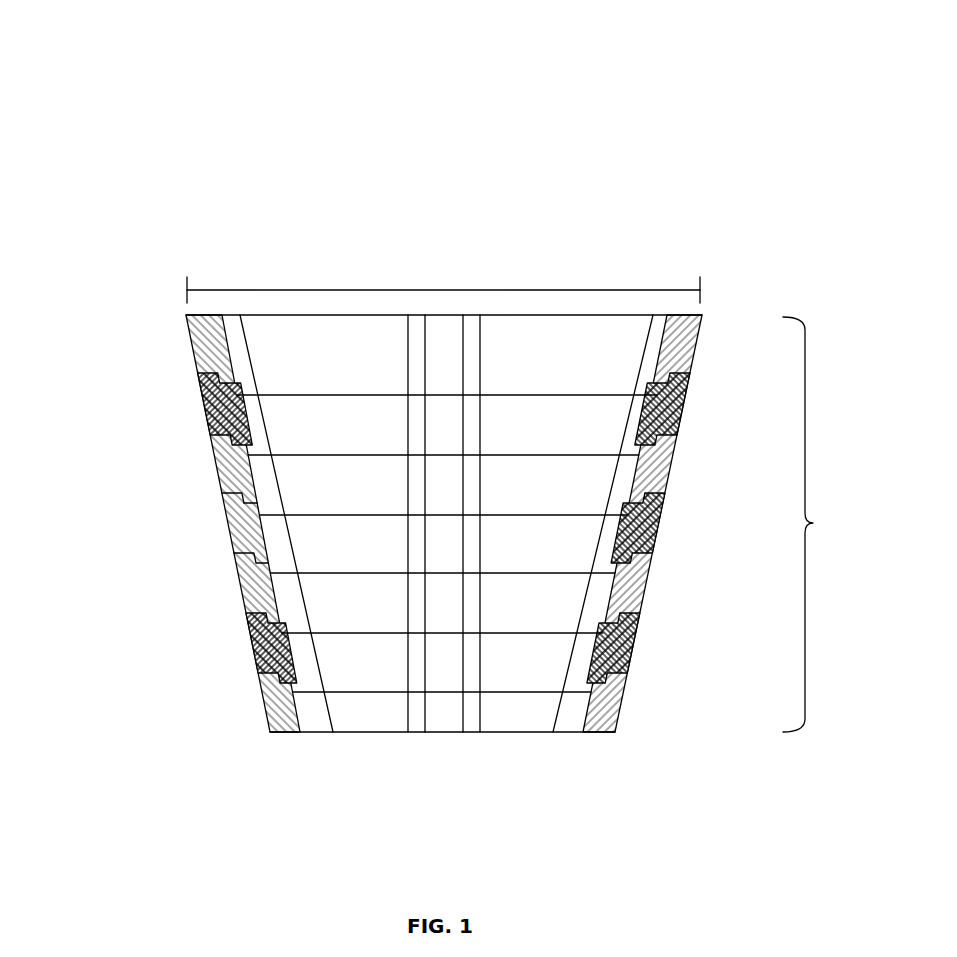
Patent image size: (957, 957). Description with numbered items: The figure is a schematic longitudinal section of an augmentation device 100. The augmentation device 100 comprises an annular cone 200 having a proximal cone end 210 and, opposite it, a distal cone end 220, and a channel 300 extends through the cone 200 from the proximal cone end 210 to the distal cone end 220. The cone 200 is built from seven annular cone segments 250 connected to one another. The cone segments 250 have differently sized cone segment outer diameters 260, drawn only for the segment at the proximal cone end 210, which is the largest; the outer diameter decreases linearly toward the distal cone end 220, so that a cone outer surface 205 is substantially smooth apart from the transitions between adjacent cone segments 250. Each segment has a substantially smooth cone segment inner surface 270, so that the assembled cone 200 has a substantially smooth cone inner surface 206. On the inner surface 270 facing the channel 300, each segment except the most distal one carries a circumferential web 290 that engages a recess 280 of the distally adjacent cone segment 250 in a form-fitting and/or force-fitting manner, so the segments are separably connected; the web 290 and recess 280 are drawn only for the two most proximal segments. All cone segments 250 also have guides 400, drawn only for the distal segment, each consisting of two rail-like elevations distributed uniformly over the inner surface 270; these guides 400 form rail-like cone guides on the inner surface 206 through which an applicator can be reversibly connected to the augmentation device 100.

The augmentation device 100 is at (684, 132).
The annular cone 200 is at (813, 523).
The cone outer surface 205 is at (658, 532).
The cone inner surface 206 is at (305, 715).
The proximal cone end 210 is at (145, 283).
The distal cone end 220 is at (203, 748).
The annular cone segments 250 is at (265, 693).
The cone segment outer diameter 260 is at (265, 289).
The cone segment inner surface 270 is at (225, 358).
The recess 280 is at (662, 380).
The circumferential web 290 is at (593, 409).
The channel 300 is at (530, 658).
The guides 400 is at (555, 723).